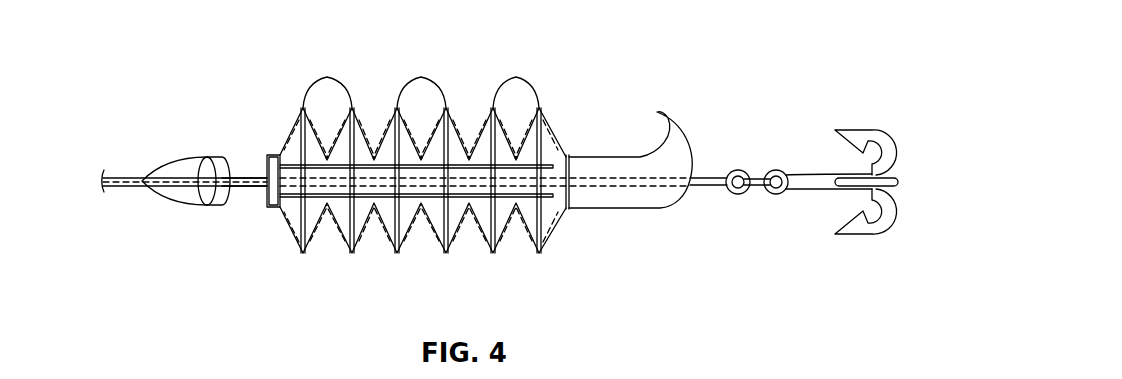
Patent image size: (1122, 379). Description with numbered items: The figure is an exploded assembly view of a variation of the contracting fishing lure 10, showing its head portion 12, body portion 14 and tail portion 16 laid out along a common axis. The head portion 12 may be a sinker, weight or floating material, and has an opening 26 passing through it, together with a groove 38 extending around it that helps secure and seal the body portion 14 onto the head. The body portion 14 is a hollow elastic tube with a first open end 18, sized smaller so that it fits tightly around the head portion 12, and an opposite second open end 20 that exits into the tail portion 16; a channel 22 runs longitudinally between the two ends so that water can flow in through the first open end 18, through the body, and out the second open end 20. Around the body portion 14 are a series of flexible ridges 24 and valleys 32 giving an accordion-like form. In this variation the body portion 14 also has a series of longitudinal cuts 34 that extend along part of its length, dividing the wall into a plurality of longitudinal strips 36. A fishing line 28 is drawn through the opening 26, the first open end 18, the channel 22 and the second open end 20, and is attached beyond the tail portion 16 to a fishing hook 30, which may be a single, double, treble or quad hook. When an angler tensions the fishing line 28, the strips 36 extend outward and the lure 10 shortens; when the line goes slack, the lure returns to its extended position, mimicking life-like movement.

The contracting fishing lure 10 is at (702, 25).
The head portion 12 is at (180, 160).
The body portion 14 is at (296, 122).
The tail portion 16 is at (583, 160).
The first open end 18 is at (266, 196).
The second open end 20 is at (574, 199).
The channel 22 is at (258, 172).
The flexible ridges 24 is at (516, 77).
The opening 26 is at (142, 184).
The fishing line 28 is at (105, 180).
The fishing hook 30 is at (852, 128).
The valleys 32 is at (514, 207).
The longitudinal cuts 34 is at (302, 208).
The longitudinal strips 36 is at (500, 228).
The groove 38 is at (207, 157).